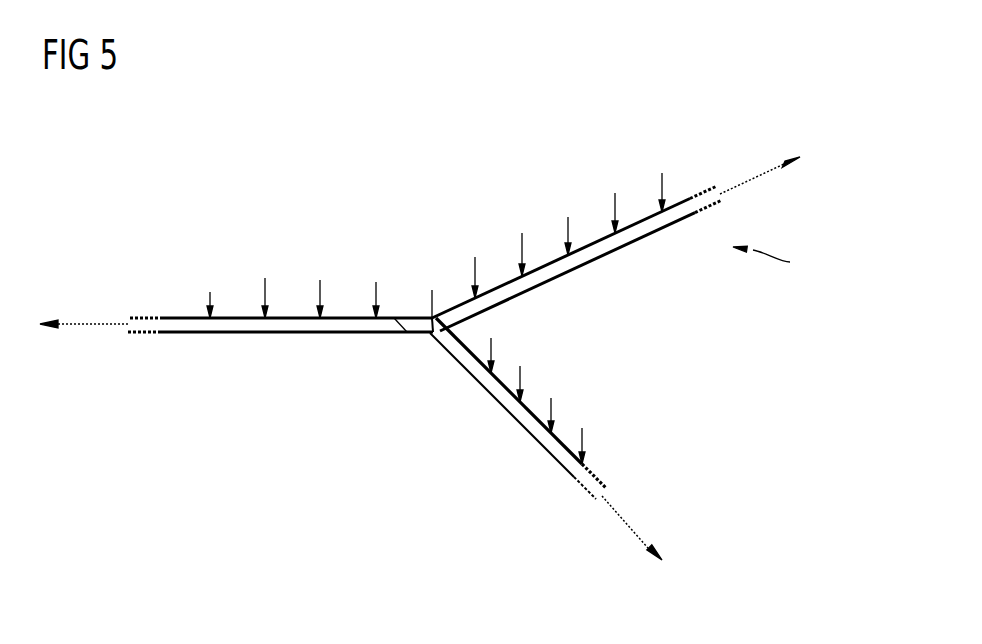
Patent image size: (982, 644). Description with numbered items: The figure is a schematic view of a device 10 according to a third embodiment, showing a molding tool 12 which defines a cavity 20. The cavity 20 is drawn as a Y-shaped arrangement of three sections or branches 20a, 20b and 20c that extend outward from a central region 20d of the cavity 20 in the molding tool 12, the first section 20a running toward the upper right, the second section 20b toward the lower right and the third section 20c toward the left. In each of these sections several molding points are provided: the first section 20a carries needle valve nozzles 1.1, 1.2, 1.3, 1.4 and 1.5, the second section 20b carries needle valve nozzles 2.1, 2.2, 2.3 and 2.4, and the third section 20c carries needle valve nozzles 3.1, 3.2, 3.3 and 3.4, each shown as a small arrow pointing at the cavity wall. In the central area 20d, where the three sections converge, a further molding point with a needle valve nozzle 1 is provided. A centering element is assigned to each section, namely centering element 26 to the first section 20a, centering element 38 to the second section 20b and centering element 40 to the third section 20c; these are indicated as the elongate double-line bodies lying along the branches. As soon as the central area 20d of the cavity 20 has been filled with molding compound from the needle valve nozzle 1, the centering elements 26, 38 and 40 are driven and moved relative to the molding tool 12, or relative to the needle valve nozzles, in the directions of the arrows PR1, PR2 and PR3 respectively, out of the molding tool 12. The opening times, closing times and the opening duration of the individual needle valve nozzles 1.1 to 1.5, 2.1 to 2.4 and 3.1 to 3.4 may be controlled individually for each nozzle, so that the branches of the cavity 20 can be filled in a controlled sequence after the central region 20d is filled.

The light guide arrangement 10 is at (788, 94).
The molding tool 12 is at (773, 260).
The cavity 20 is at (401, 352).
The first section of the cavity 20a is at (540, 287).
The second section of the cavity 20b is at (450, 350).
The third section of the cavity 20c is at (183, 316).
The central region of the cavity 20d is at (420, 316).
The centering element 26 is at (556, 277).
The centering element 38 is at (550, 457).
The centering element 40 is at (249, 334).
The direction arrow PR1 is at (740, 184).
The direction arrow PR2 is at (620, 514).
The direction arrow PR3 is at (113, 318).
The needle valve nozzle 1 is at (432, 290).
The needle valve nozzle 1.1 is at (475, 257).
The needle valve nozzle 1.2 is at (522, 233).
The needle valve nozzle 1.3 is at (568, 217).
The needle valve nozzle 1.4 is at (615, 193).
The needle valve nozzle 1.5 is at (662, 173).
The needle valve nozzle 2.1 is at (491, 338).
The needle valve nozzle 2.2 is at (520, 366).
The needle valve nozzle 2.3 is at (551, 398).
The needle valve nozzle 2.4 is at (582, 428).
The needle valve nozzle 3.1 is at (376, 282).
The needle valve nozzle 3.2 is at (320, 280).
The needle valve nozzle 3.3 is at (265, 278).
The needle valve nozzle 3.4 is at (210, 292).